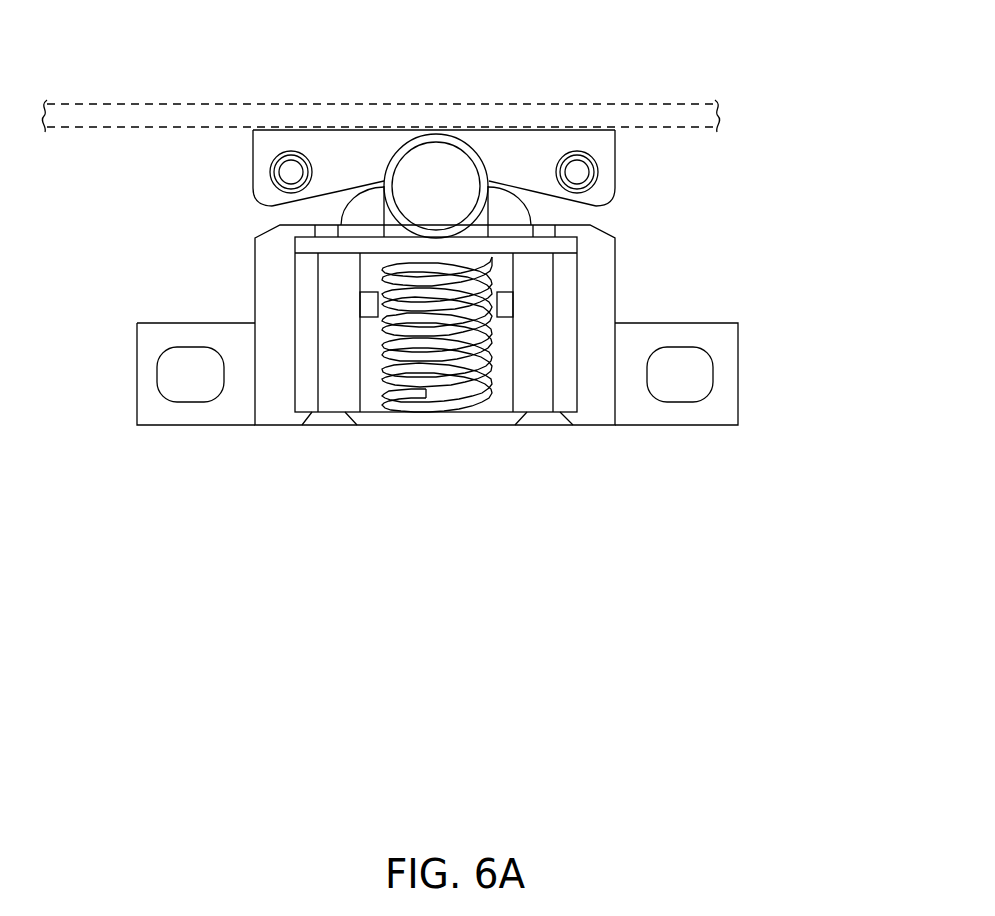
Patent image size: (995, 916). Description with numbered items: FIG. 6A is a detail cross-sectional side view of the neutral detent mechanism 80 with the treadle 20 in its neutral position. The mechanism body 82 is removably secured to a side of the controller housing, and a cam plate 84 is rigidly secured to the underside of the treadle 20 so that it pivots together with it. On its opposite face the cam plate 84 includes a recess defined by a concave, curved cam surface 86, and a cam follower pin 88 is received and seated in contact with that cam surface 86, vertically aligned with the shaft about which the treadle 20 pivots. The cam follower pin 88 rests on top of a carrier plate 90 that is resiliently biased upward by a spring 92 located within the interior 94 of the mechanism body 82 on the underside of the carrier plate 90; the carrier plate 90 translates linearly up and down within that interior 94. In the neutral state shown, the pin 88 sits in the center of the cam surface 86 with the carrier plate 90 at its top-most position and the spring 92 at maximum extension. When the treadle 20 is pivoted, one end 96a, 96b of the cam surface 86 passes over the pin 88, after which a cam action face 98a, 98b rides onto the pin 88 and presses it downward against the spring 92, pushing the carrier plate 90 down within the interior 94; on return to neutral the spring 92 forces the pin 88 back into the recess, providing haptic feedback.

The treadle 20 is at (78, 107).
The neutral detent mechanism 80 is at (822, 172).
The mechanism body 82 is at (603, 302).
The cam plate 84 is at (602, 157).
The cam surface 86 is at (383, 160).
The cam follower pin 88 is at (428, 170).
The carrier plate 90 is at (336, 243).
The spring 92 is at (392, 400).
The interior 94 is at (342, 367).
The end of the cam surface 96a is at (371, 176).
The end of the cam surface 96b is at (494, 176).
The cam action face 98a is at (327, 188).
The cam action face 98b is at (529, 184).